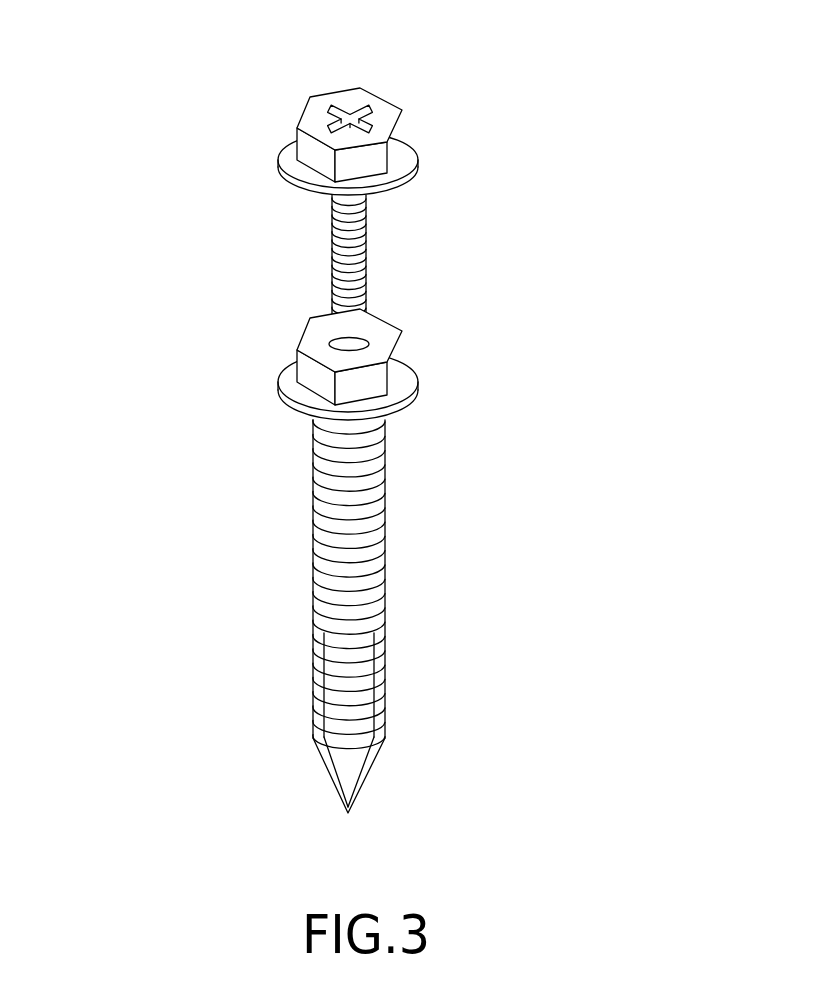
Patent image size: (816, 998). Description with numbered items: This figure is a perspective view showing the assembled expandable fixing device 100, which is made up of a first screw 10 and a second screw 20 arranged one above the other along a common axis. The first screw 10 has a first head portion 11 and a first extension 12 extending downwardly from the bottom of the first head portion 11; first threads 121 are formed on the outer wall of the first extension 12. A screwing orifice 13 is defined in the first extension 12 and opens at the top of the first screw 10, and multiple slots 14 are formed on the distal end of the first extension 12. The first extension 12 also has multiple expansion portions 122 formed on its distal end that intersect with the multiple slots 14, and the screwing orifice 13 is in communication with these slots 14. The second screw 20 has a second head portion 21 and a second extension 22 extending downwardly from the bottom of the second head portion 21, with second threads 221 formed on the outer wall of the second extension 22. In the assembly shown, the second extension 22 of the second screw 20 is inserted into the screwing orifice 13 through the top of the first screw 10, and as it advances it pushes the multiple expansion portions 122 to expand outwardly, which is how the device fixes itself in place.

The expandable fixing device 100 is at (132, 42).
The first screw 10 is at (265, 370).
The first head portion 11 is at (395, 365).
The first extension 12 is at (313, 540).
The first threads 121 is at (353, 503).
The expansion portions 122 is at (315, 732).
The screwing orifice 13 is at (357, 347).
The slots 14 is at (315, 708).
The second screw 20 is at (440, 128).
The second head portion 21 is at (358, 100).
The second extension 22 is at (366, 234).
The second threads 221 is at (353, 250).